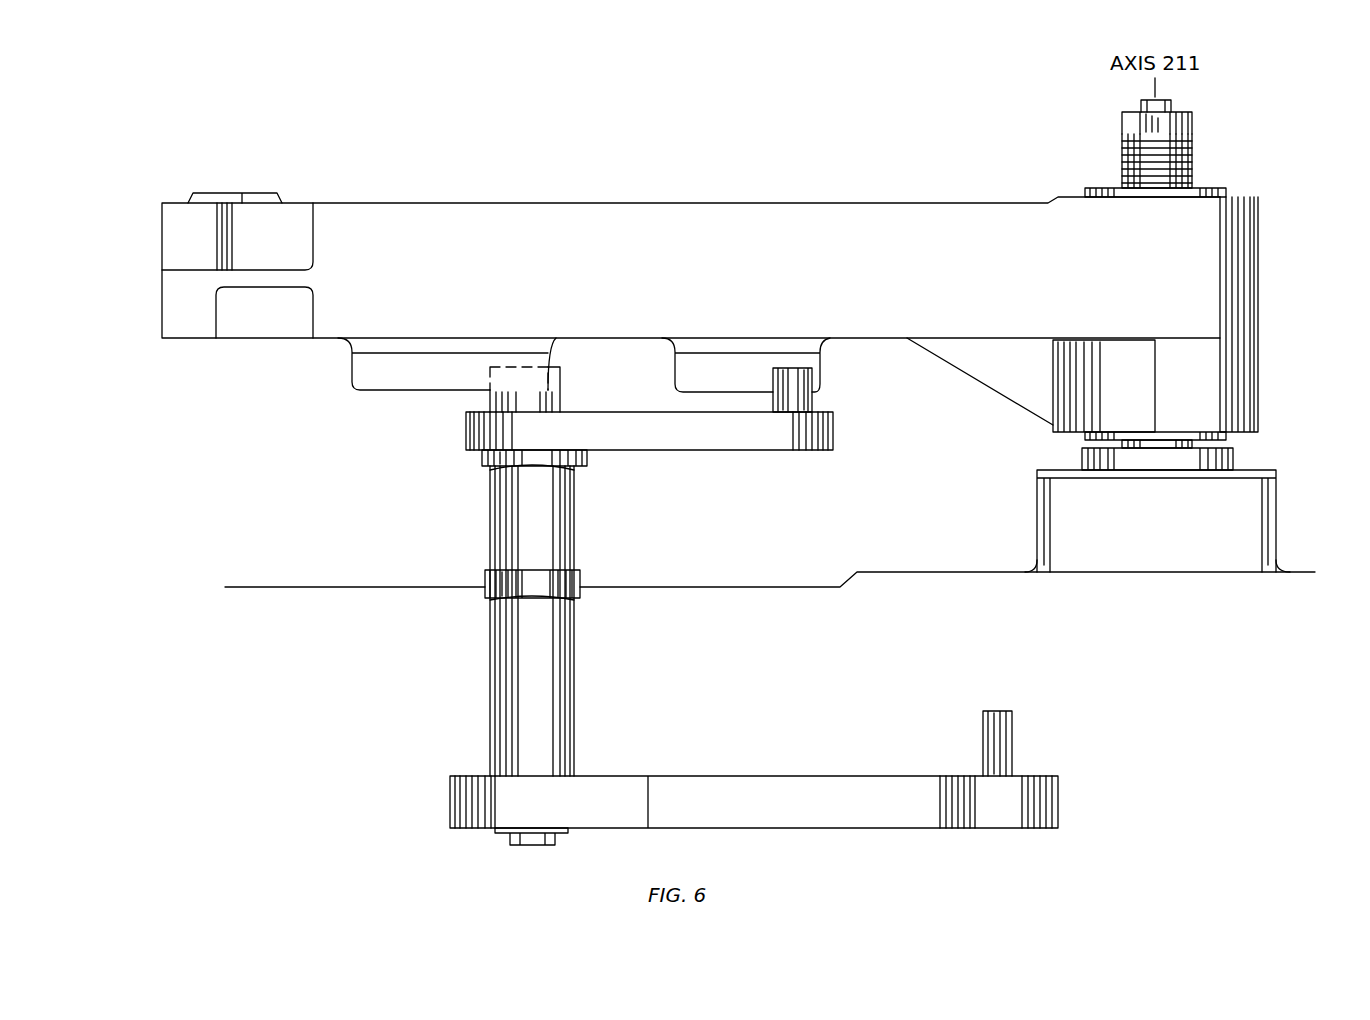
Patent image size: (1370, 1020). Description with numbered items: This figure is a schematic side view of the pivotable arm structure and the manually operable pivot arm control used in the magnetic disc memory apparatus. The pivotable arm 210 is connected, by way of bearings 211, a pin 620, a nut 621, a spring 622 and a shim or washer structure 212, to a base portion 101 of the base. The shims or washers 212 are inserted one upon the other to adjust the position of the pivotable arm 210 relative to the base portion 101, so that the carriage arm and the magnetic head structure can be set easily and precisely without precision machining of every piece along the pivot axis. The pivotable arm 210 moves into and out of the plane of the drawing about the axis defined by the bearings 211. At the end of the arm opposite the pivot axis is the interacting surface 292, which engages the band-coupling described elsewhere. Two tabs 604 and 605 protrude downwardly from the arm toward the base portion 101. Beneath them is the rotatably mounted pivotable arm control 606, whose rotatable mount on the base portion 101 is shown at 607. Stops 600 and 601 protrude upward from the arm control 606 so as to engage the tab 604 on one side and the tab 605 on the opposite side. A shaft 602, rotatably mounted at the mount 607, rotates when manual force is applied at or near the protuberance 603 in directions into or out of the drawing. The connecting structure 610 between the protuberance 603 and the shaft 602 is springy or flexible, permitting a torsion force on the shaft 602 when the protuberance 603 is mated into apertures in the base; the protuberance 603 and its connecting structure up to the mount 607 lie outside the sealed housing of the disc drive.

The base portion 101 is at (318, 583).
The pivotable arm 210 is at (733, 203).
The bearings 211 is at (1230, 193).
The shim or washer structure 212 is at (1276, 472).
The interacting surface 292 is at (163, 302).
The stop 600 is at (560, 385).
The stop 601 is at (815, 405).
The shaft 602 is at (575, 728).
The protuberance 603 is at (1013, 742).
The tab 604 is at (385, 392).
The tab 605 is at (820, 376).
The pivotable arm control 606 is at (718, 450).
The rotatable mount 607 is at (580, 598).
The connecting structure 610 is at (800, 776).
The pin 620 is at (1167, 103).
The nut 621 is at (1193, 127).
The spring 622 is at (1193, 163).